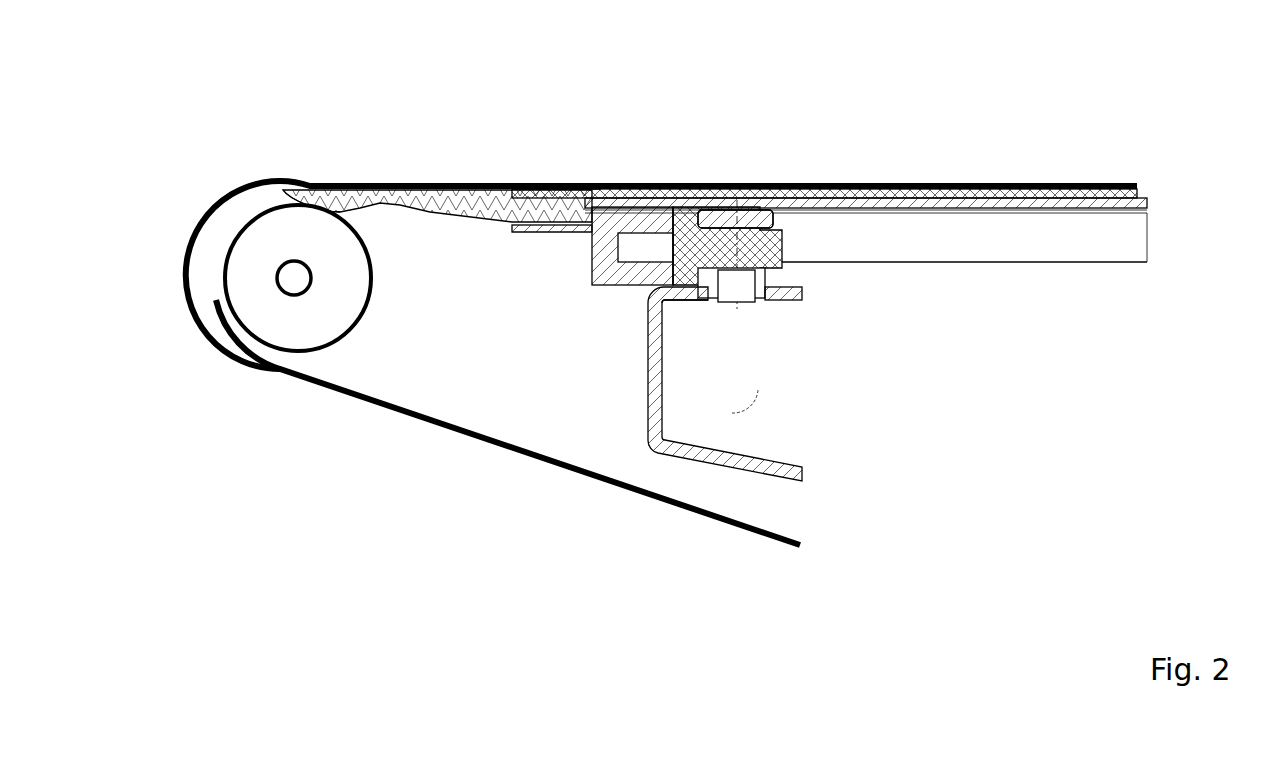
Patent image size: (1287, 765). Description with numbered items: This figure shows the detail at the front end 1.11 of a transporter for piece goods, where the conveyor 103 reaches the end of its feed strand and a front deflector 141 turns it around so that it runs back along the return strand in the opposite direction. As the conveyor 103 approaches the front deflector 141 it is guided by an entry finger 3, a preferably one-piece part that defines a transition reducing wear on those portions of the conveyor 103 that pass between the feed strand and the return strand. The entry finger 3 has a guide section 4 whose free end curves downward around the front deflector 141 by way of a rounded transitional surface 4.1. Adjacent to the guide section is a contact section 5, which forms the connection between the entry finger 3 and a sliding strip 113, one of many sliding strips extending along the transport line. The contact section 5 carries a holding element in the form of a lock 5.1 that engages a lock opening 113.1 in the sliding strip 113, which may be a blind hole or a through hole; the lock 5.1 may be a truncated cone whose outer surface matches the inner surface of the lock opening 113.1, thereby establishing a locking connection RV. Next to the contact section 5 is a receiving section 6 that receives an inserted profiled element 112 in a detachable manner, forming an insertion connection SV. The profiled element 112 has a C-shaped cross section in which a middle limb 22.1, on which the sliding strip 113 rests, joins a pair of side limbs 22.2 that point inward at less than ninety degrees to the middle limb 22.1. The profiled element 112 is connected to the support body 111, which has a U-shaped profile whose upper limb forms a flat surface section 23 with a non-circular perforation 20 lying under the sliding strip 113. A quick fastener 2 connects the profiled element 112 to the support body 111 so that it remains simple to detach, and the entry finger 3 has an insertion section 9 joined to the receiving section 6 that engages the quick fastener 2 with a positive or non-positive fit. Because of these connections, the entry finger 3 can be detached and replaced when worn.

The conveyor 103 is at (490, 432).
The front end 1.11 is at (215, 322).
The front deflector 141 is at (262, 292).
The carrier plate 4 is at (372, 200).
The rounded transitional surface 4.1 is at (280, 193).
The lock opening 113.1 is at (557, 192).
The sliding strip 113 is at (905, 188).
The middle limb 22.1 is at (1085, 203).
The side limbs 22.2 is at (1091, 240).
The profiled element 112 is at (1155, 232).
The locking connection RV is at (570, 180).
The lock 5.1 is at (572, 197).
The contact section 5 is at (590, 210).
The receiving section 6 is at (672, 218).
The insertion connection SV is at (652, 212).
The insertion section 9 is at (767, 242).
The quick fastener 2 is at (717, 288).
The perforation 20 is at (763, 307).
The support body 111 is at (783, 470).
The flat surface section 23 is at (688, 305).
The entry finger 3 is at (530, 315).